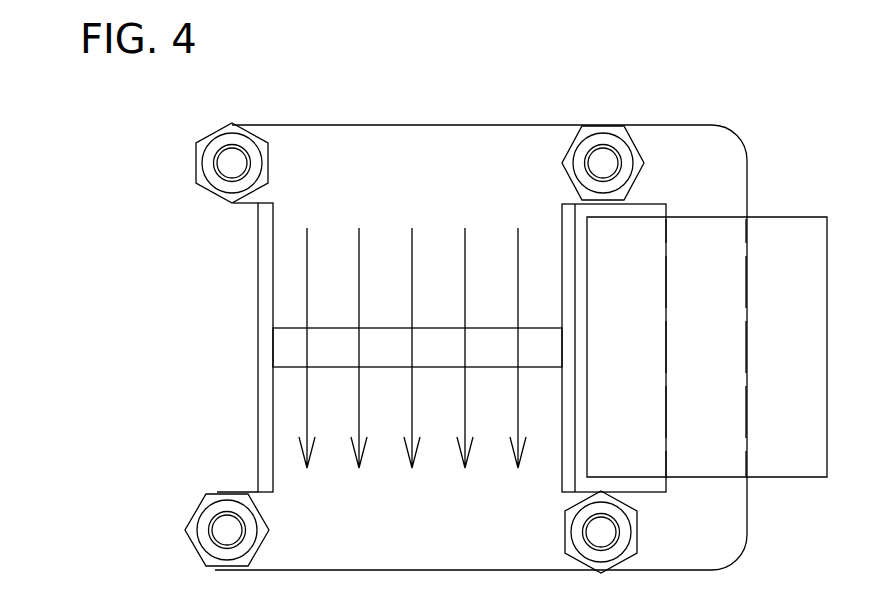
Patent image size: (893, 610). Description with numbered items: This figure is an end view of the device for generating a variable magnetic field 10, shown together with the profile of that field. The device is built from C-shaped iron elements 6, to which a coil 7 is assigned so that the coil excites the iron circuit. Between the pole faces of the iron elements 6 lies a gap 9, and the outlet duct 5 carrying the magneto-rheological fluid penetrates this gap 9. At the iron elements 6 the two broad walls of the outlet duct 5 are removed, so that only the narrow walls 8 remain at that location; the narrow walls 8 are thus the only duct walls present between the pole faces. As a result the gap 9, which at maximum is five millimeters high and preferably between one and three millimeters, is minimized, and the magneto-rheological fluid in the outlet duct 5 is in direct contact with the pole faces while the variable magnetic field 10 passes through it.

The outlet duct 5 is at (280, 358).
The C-shaped iron elements 6 is at (506, 151).
The coil 7 is at (787, 237).
The narrow walls 8 is at (267, 283).
The gap 9 is at (328, 343).
The variable magnetic field 10 is at (306, 410).